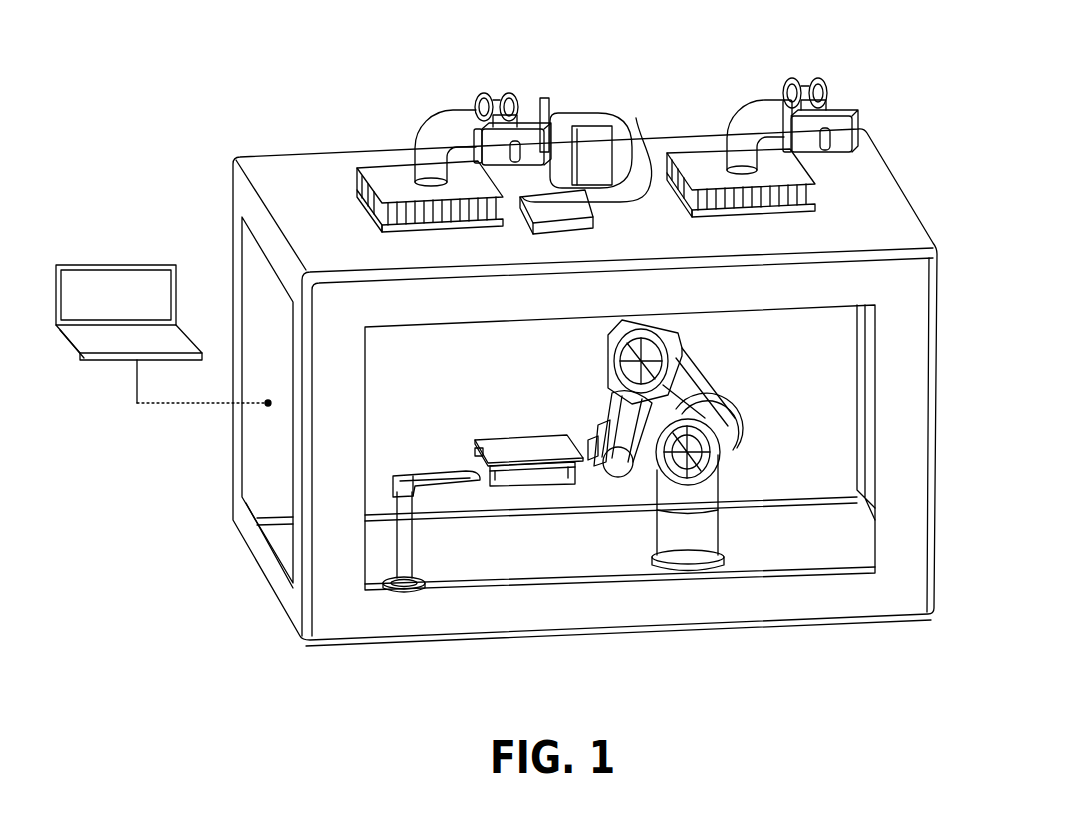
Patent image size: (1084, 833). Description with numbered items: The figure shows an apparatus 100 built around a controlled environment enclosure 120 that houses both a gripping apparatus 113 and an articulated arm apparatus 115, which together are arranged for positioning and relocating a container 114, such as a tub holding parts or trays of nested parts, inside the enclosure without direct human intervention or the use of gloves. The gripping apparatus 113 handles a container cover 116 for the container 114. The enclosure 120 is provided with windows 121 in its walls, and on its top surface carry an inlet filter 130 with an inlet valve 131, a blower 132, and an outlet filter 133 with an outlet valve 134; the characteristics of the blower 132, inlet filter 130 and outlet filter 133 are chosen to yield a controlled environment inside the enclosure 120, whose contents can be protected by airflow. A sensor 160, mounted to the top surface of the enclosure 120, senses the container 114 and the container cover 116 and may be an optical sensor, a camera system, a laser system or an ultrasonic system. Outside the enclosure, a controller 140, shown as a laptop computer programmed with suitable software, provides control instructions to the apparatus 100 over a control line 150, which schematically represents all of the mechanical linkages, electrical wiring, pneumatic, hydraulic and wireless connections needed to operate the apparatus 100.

The apparatus 100 is at (172, 520).
The gripping apparatus 113 is at (407, 540).
The container 114 is at (560, 477).
The articulated arm apparatus 115 is at (680, 542).
The container cover 116 is at (540, 453).
The controlled environment enclosure 120 is at (232, 222).
The windows 121 is at (373, 570).
The inlet filter 130 is at (356, 181).
The inlet valve 131 is at (492, 94).
The blower 132 is at (591, 112).
The outlet filter 133 is at (813, 196).
The outlet valve 134 is at (806, 78).
The controller 140 is at (70, 265).
The control line 150 is at (193, 403).
The sensor 160 is at (636, 118).